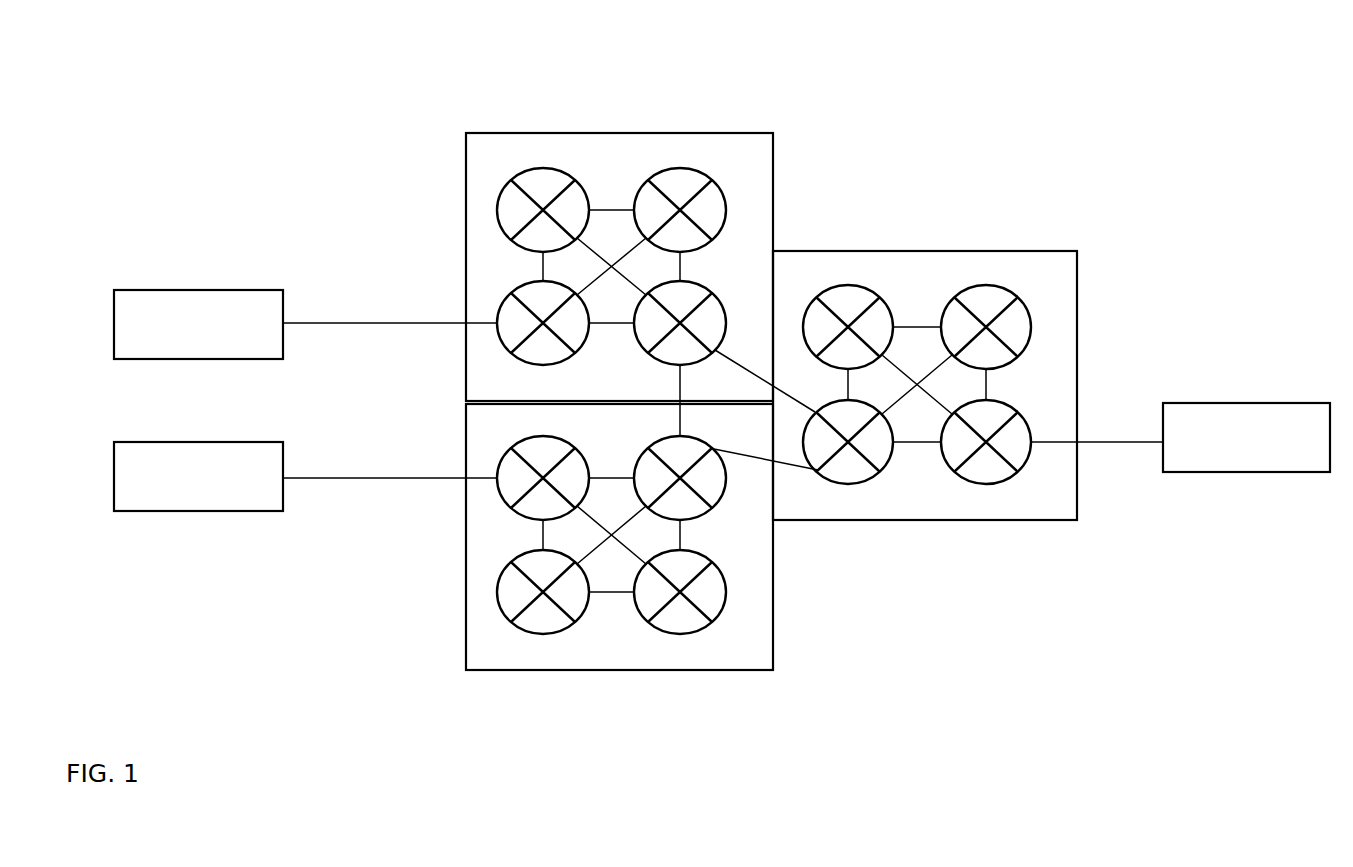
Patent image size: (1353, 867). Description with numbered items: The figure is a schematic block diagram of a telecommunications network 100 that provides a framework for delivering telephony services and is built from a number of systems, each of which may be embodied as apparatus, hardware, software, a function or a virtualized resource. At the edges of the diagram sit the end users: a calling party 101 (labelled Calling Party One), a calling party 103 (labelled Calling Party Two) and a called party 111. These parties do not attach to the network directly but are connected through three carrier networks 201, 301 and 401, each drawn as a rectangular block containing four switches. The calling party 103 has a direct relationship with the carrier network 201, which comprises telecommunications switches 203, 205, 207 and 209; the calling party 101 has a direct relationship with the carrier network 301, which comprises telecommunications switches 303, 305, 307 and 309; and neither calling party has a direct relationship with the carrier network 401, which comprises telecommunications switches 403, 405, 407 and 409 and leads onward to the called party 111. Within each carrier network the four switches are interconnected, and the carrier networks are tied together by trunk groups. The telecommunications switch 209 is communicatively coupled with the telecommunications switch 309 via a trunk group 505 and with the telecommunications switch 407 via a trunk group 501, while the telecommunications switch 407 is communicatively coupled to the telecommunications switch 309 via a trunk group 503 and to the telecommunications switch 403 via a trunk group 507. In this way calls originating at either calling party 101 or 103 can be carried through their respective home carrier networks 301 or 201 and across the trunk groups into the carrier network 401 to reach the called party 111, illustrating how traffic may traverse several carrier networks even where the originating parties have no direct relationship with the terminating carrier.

The telecommunications network 100 is at (416, 77).
The calling party 101 is at (182, 498).
The calling party 103 is at (182, 346).
The called party 111 is at (1231, 458).
The carrier network 201 is at (760, 164).
The telecommunications switch 203 is at (513, 180).
The telecommunications switch 205 is at (647, 178).
The telecommunications switch 207 is at (500, 340).
The telecommunications switch 209 is at (650, 358).
The carrier network 301 is at (766, 436).
The telecommunications switch 303 is at (503, 508).
The telecommunications switch 305 is at (500, 598).
The telecommunications switch 307 is at (725, 592).
The telecommunications switch 309 is at (705, 519).
The carrier network 401 is at (1069, 284).
The telecommunications switch 403 is at (857, 287).
The telecommunications switch 405 is at (990, 285).
The telecommunications switch 407 is at (863, 479).
The telecommunications switch 409 is at (997, 482).
The trunk group 501 is at (765, 378).
The trunk group 503 is at (757, 459).
The trunk group 505 is at (678, 404).
The trunk group 507 is at (847, 384).